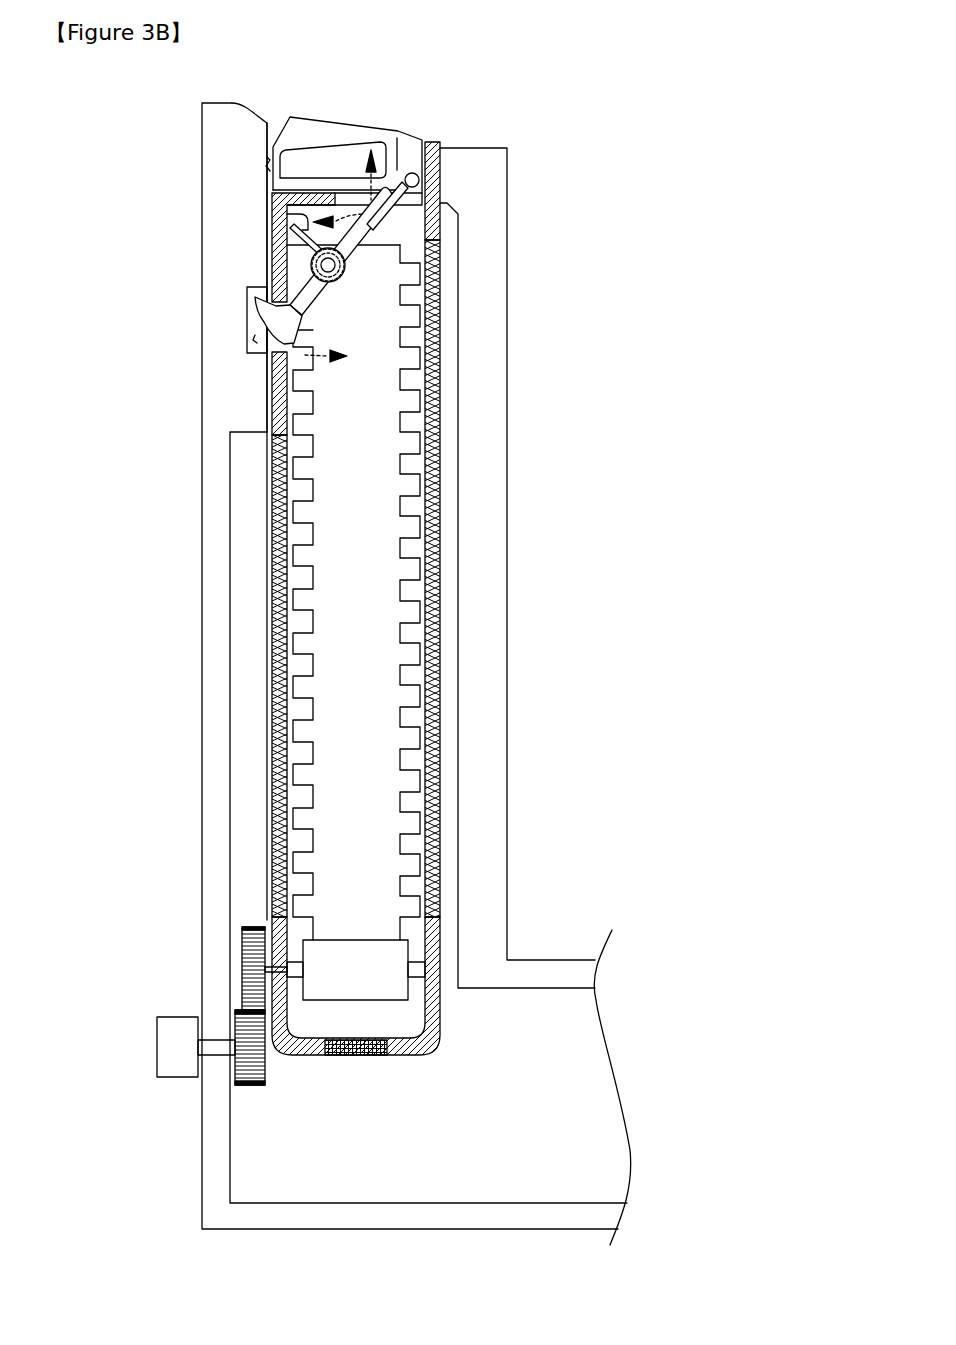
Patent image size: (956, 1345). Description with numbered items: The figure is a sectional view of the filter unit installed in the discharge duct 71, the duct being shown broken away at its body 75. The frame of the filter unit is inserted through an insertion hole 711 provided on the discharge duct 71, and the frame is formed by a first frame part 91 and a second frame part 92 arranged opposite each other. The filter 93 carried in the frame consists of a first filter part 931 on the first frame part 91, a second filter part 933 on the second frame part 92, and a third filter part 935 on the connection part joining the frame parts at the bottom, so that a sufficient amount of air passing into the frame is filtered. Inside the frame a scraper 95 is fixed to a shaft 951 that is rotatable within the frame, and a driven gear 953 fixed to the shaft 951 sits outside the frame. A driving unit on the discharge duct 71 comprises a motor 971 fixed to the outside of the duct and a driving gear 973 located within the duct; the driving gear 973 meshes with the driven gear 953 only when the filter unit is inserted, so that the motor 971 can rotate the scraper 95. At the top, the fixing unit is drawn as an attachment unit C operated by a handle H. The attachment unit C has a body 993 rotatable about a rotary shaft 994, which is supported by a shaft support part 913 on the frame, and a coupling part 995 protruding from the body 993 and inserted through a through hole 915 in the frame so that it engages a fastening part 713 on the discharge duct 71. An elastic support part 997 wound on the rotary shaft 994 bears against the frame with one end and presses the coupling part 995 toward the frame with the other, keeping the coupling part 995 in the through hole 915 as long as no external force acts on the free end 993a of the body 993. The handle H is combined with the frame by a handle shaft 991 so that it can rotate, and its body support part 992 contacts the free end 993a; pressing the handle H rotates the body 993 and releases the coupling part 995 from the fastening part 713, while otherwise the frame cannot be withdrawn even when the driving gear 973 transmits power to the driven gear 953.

The discharge duct 71 is at (448, 437).
The housing body (broken away) 75 is at (570, 1047).
The insertion hole 711 is at (266, 160).
The fastening part 713 is at (247, 340).
The handle H is at (343, 150).
The handle shaft 991 is at (414, 170).
The body support part 992 is at (443, 203).
The first frame part 91 is at (285, 255).
The shaft support part 913 is at (297, 268).
The through hole 915 is at (268, 353).
The second frame part 92 is at (438, 247).
The first filter part 931 is at (272, 512).
The second filter part 933 is at (437, 520).
The filter 93 is at (405, 1058).
The third filter part 935 is at (358, 1058).
The scraper 95 is at (370, 880).
The shaft 951 is at (423, 962).
The driven gear 953 is at (252, 924).
The motor 971 is at (175, 1018).
The driving gear 973 is at (240, 1088).
The body 993 is at (300, 312).
The free end 993a is at (397, 210).
The rotary shaft 994 is at (347, 265).
The coupling part 995 is at (253, 315).
The elastic support part 997 is at (315, 232).
The attachment unit C is at (583, 291).